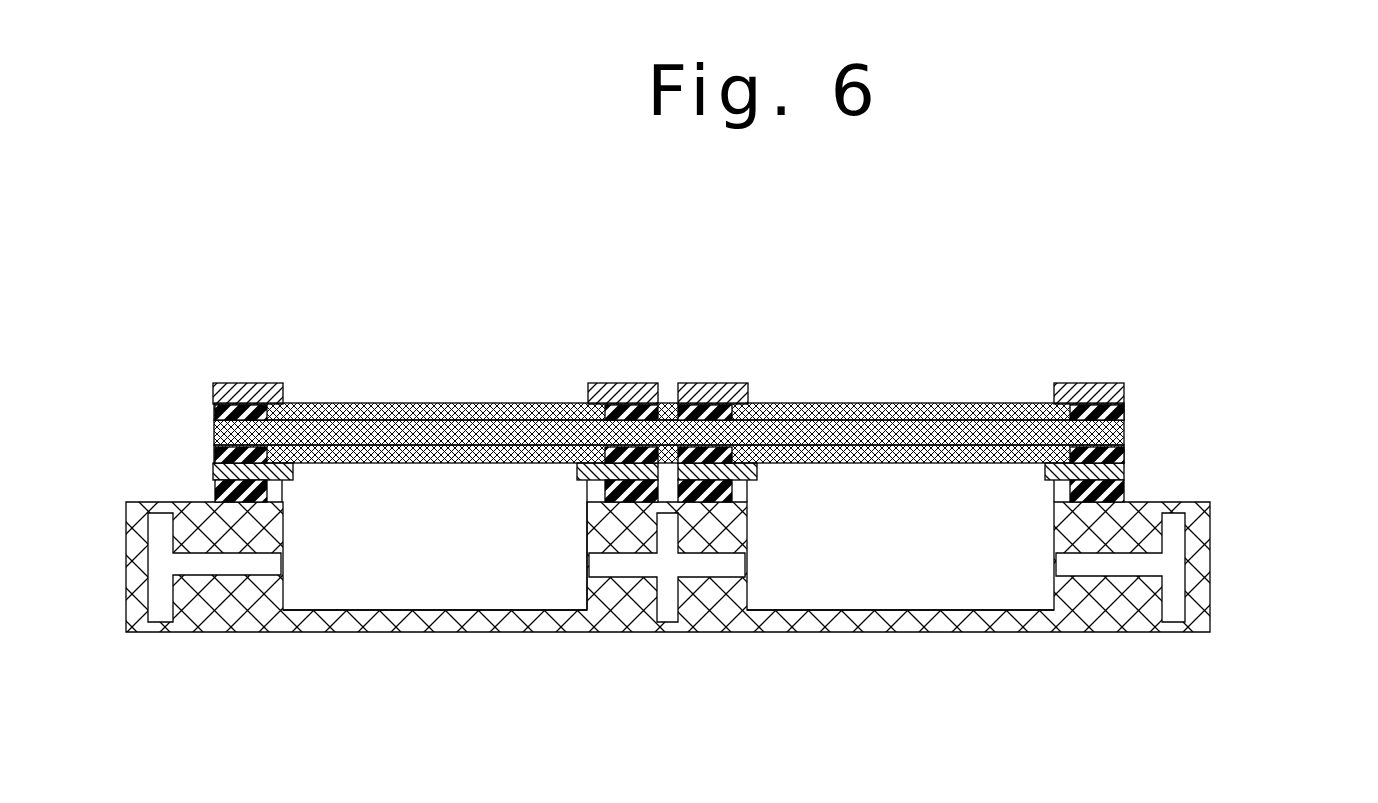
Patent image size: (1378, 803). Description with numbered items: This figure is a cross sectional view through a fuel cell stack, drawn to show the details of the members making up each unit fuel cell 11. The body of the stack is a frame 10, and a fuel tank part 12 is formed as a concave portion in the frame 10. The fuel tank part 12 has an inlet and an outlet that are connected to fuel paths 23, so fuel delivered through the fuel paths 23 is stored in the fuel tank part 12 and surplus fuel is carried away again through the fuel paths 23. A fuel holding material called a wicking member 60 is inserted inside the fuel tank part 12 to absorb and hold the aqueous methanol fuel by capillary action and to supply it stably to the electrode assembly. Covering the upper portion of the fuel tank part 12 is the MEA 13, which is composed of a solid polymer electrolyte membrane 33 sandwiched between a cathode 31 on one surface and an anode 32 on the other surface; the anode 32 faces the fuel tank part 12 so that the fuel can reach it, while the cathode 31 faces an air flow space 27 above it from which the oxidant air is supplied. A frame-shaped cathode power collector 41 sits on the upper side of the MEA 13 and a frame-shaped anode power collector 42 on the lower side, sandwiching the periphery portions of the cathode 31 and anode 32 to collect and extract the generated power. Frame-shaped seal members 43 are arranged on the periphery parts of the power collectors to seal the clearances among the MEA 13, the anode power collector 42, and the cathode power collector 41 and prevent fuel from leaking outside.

The frame 10 is at (352, 631).
The unit fuel cell 11 is at (1307, 330).
The fuel tank part 12 is at (438, 612).
The MEA 13 is at (743, 437).
The fuel path 23 is at (163, 603).
The air flow space 27 is at (673, 369).
The cathode 31 is at (1125, 407).
The anode 32 is at (716, 465).
The solid polymer electrolyte membrane 33 is at (1125, 445).
The cathode power collector 41 is at (1125, 395).
The anode power collector 42 is at (1125, 472).
The seal member 43 is at (213, 490).
The wicking member 60 is at (566, 594).